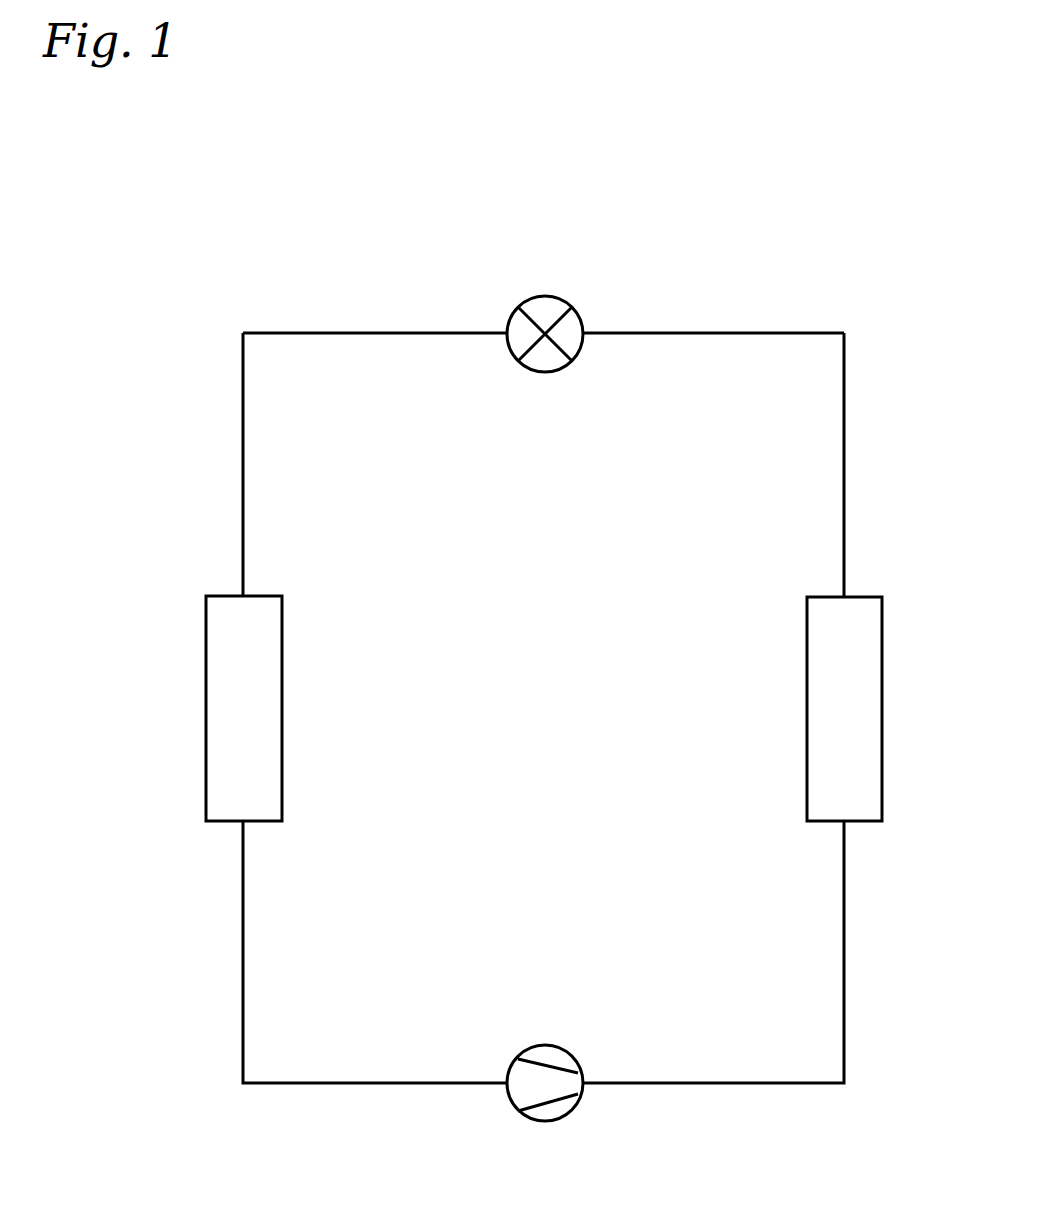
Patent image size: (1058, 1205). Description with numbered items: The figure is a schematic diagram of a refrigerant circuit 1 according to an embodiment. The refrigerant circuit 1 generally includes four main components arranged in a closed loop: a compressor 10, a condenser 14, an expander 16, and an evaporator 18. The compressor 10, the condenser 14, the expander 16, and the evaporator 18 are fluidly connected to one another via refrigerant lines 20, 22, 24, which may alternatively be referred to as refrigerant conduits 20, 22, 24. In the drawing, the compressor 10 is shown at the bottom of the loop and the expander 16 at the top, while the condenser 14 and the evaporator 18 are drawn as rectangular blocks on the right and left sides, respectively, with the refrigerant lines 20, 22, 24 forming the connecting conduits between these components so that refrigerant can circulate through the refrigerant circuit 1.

The refrigerant circuit 1 is at (757, 240).
The compressor 10 is at (562, 1117).
The condenser 14 is at (883, 637).
The expander 16 is at (528, 298).
The evaporator 18 is at (206, 636).
The refrigerant line 20 is at (755, 1083).
The refrigerant line 22 is at (315, 333).
The refrigerant line 24 is at (308, 1083).